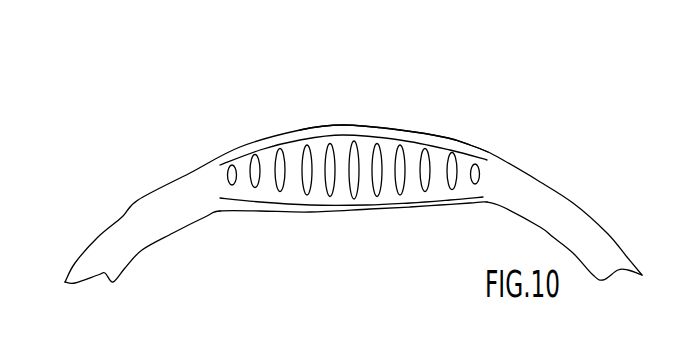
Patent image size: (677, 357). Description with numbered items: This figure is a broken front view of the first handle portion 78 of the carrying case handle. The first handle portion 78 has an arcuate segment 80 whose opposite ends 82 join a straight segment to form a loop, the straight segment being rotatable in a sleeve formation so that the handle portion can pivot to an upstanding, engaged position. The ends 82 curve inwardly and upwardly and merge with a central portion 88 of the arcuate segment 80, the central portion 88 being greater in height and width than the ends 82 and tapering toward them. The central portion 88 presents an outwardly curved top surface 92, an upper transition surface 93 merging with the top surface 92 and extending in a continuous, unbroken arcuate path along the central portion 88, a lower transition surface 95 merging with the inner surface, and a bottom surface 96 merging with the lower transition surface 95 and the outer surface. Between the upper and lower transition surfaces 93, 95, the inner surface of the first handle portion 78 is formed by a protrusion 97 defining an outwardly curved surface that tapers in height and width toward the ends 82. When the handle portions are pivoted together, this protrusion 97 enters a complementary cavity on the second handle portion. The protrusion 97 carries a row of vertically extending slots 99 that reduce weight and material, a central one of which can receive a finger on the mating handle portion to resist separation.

The first handle portion 78 is at (348, 172).
The arcuate segment 80 is at (190, 173).
The ends 82 is at (95, 242).
The central portion 88 is at (448, 139).
The top surface 92 is at (343, 124).
The upper transition surface 93 is at (392, 135).
The lower transition surface 95 is at (370, 209).
The bottom surface 96 is at (311, 213).
The protrusion 97 is at (269, 160).
The slots 99 is at (352, 178).